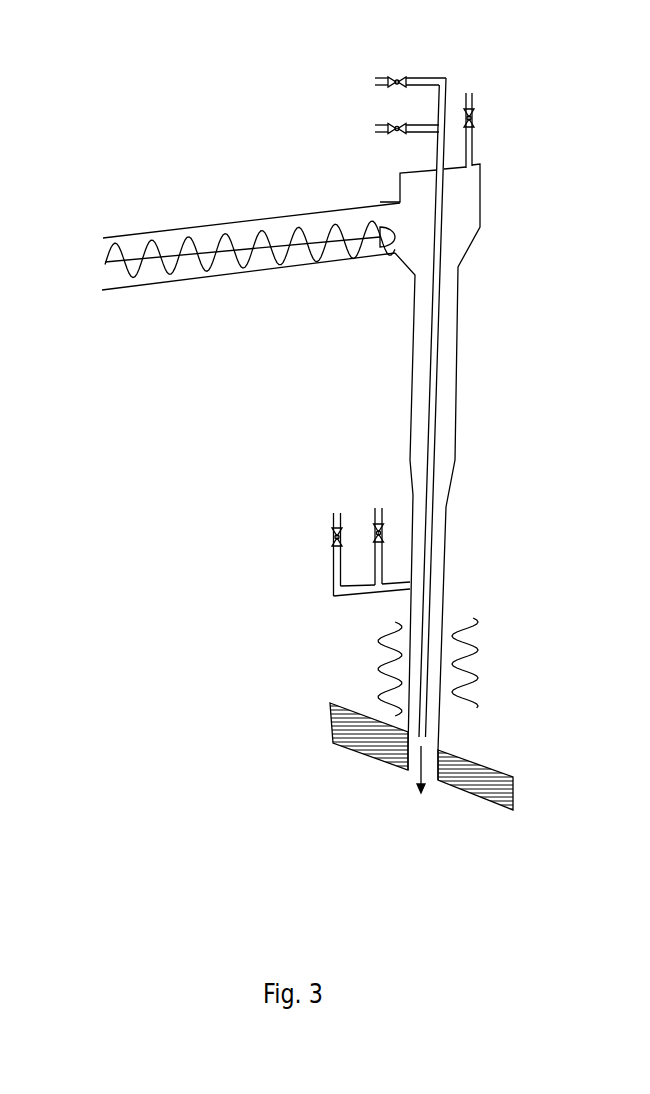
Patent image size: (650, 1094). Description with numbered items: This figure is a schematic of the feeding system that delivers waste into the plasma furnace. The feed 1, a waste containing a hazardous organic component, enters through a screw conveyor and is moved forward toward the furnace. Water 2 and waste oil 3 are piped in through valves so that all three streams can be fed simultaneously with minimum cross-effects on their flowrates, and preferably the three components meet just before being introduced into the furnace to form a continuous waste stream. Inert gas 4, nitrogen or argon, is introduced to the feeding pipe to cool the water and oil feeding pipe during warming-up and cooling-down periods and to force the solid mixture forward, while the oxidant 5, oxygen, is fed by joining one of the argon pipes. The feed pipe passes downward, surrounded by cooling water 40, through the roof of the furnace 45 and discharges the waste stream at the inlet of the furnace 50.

The feed 1 is at (96, 266).
The water 2 is at (381, 44).
The waste oil 3 is at (365, 130).
The inert gas 4 is at (470, 84).
The oxidant 5 is at (378, 499).
The cooling water 40 is at (442, 667).
The roof of the furnace 45 is at (407, 756).
The inlet of the furnace 50 is at (423, 451).